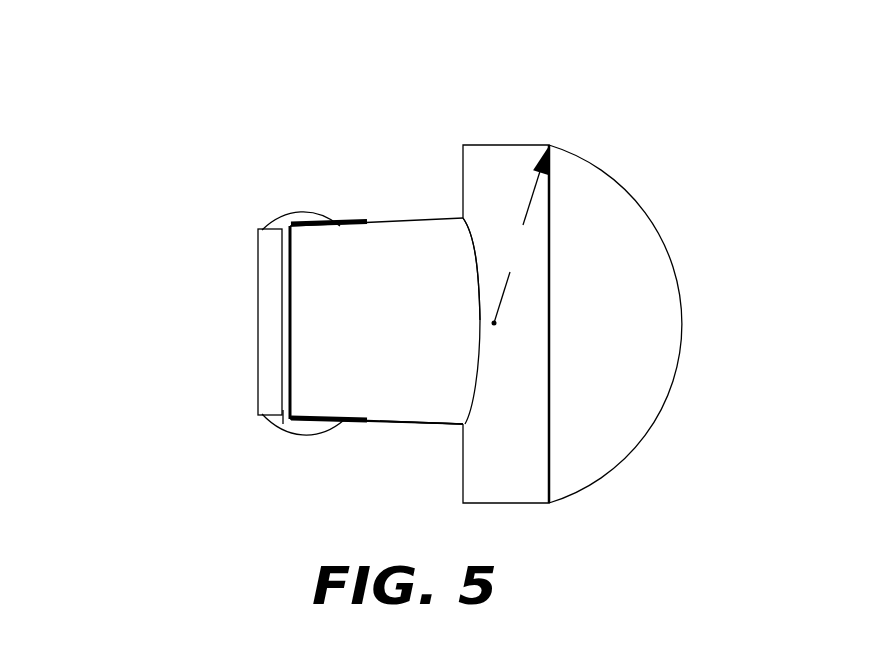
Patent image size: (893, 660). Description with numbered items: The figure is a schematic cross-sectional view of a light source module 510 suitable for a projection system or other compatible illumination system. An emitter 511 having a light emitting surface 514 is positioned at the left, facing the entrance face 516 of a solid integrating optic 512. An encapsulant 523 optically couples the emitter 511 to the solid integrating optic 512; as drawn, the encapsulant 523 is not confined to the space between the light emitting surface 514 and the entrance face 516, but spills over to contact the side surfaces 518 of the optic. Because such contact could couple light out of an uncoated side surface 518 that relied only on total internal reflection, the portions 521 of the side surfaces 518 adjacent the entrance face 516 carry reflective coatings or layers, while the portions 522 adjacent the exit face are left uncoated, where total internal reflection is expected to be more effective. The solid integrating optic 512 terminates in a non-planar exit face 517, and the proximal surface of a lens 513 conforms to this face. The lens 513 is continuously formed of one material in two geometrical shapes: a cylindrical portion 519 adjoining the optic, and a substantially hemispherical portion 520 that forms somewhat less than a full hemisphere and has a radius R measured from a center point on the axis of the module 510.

The light source module 510 is at (248, 136).
The emitter 511 is at (268, 262).
The solid integrating optic 512 is at (317, 322).
The lens 513 is at (595, 165).
The light emitting surface 514 is at (280, 387).
The entrance face 516 is at (290, 260).
The non-planar exit face 517 is at (473, 257).
The side surfaces 518 is at (388, 417).
The cylindrical portion 519 is at (492, 168).
The substantially hemispherical portion 520 is at (645, 245).
The portions of side surfaces with reflective coatings 521 is at (340, 423).
The uncoated portions of side surfaces 522 is at (410, 423).
The encapsulant 523 is at (283, 418).